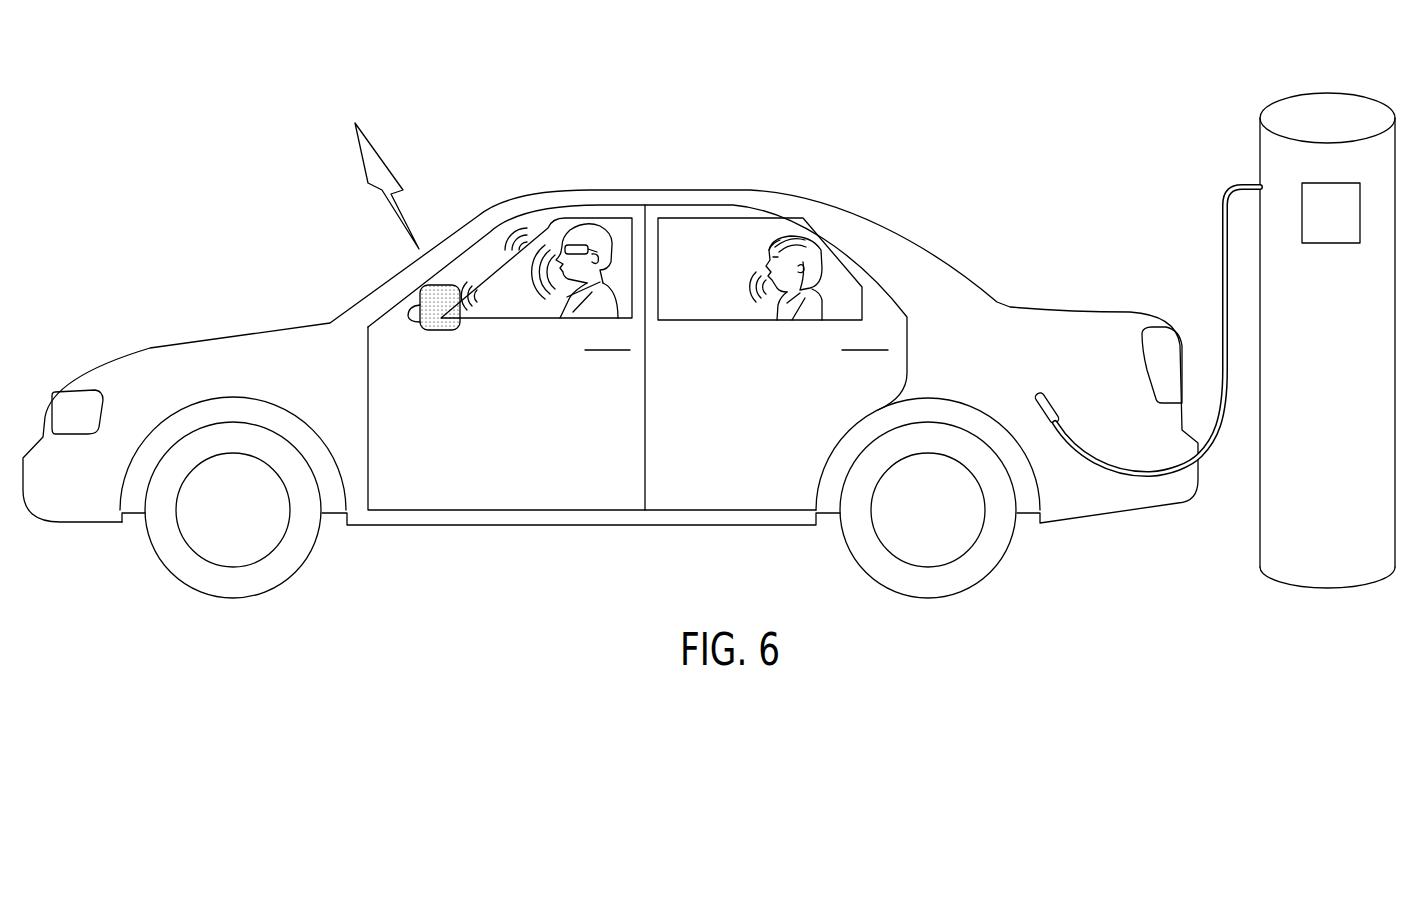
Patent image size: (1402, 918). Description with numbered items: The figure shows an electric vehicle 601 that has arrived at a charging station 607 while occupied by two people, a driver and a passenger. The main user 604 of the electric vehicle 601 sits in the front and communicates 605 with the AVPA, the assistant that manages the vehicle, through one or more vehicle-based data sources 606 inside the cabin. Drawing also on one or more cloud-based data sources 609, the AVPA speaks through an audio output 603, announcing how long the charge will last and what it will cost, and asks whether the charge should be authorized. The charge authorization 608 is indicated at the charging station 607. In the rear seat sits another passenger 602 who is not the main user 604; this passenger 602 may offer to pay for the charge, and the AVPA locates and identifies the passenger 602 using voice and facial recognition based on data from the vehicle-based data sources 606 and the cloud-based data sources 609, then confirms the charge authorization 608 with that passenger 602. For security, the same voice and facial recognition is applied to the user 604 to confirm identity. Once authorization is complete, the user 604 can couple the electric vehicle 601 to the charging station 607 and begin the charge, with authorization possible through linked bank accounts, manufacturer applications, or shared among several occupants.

The electric vehicle 601 is at (306, 197).
The passenger 602 is at (822, 263).
The audio output 603 is at (478, 292).
The user 604 is at (588, 235).
The communication 605 is at (542, 285).
The vehicle-based data sources 606 is at (522, 247).
The charging station 607 is at (1295, 95).
The charge authorization 608 is at (1332, 245).
The cloud-based data sources 609 is at (392, 167).